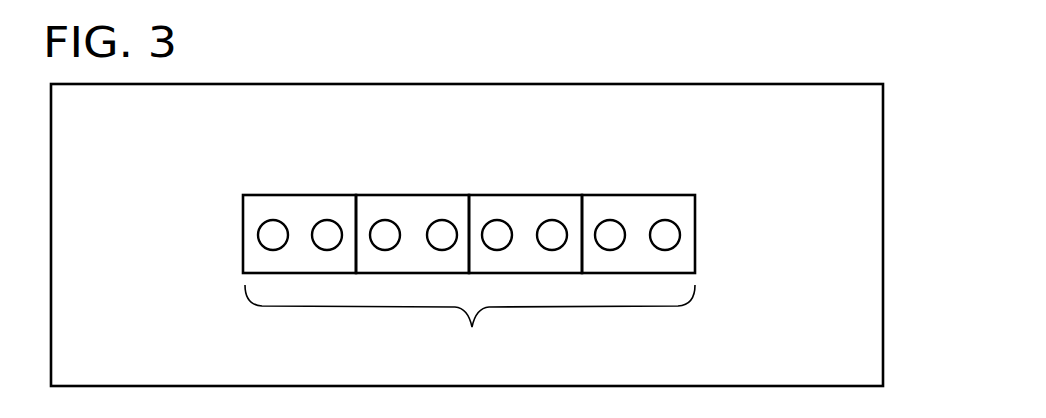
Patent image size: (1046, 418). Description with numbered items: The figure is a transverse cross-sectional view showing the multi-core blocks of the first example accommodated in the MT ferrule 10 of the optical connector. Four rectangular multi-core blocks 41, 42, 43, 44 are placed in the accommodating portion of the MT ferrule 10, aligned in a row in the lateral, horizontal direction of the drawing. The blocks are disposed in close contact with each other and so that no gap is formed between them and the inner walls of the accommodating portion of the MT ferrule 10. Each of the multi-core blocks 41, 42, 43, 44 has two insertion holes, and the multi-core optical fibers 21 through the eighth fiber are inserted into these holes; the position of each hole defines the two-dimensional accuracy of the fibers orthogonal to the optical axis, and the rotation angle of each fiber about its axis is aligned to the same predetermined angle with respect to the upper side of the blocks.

The MT ferrule 10 is at (884, 187).
The multi-core block 41 is at (302, 195).
The multi-core block 42 is at (414, 195).
The multi-core block 43 is at (525, 195).
The multi-core block 44 is at (638, 195).
The multi-core optical fiber 21 is at (470, 325).